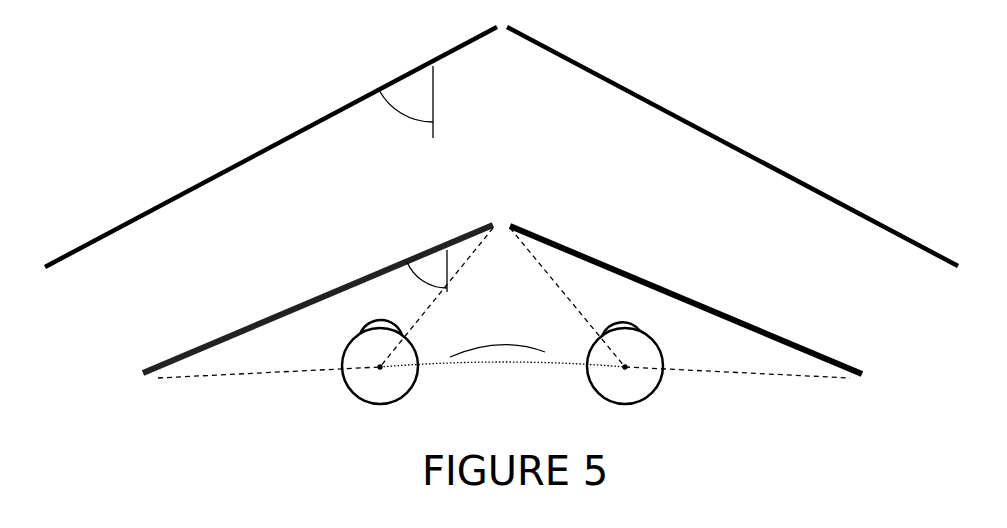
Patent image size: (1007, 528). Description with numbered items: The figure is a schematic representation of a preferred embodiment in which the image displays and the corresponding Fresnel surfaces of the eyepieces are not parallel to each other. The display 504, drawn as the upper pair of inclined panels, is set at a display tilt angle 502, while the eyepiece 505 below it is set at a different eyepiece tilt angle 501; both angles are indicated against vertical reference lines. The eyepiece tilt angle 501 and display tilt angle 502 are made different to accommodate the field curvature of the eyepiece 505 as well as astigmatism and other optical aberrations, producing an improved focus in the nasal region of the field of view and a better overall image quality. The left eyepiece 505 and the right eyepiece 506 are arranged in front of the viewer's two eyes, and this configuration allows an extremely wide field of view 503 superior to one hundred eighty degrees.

The eyepiece tilt angle 501 is at (425, 287).
The display tilt angle 502 is at (410, 122).
The field of view 503 is at (512, 332).
The display 504 is at (192, 180).
The left eyepiece 505 is at (215, 338).
The right eyepiece 506 is at (700, 290).